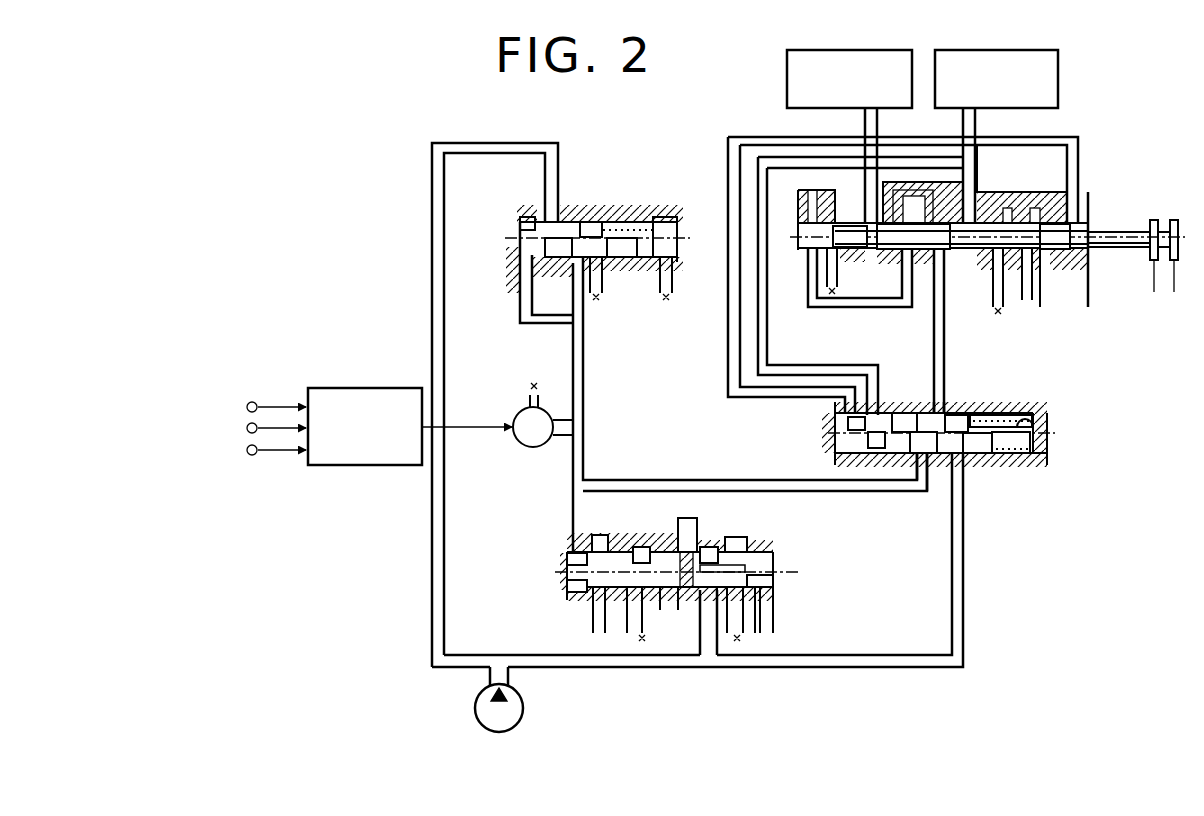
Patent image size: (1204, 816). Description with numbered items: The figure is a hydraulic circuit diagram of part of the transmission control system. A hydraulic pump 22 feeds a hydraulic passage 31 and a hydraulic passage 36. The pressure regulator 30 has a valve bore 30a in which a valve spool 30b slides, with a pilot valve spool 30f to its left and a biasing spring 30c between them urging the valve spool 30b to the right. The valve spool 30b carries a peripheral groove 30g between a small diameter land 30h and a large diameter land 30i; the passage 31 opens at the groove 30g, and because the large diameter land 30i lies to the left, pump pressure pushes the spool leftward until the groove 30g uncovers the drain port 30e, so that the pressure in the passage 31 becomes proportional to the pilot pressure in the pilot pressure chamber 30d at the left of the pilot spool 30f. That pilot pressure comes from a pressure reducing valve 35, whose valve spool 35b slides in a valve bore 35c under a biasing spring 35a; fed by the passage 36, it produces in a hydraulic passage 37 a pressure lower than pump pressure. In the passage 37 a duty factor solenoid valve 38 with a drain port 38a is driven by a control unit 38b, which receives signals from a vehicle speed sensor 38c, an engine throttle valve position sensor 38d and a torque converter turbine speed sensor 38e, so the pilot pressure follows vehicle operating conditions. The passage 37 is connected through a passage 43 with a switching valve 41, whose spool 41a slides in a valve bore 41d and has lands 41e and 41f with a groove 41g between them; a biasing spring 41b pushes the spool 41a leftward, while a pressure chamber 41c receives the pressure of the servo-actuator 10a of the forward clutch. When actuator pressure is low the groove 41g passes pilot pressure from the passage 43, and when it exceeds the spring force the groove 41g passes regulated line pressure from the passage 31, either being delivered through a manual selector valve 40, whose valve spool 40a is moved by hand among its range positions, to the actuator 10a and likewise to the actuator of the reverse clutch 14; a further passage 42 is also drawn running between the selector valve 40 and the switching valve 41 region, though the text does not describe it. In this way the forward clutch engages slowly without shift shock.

The servo-actuator 10a is at (1058, 82).
The reverse clutch 14 is at (787, 82).
The hydraulic pump 22 is at (523, 708).
The pressure regulator 30 is at (712, 528).
The valve bore 30a is at (757, 545).
The valve spool 30b is at (763, 588).
The biasing spring 30c is at (634, 547).
The pilot pressure chamber 30d is at (566, 583).
The drain port 30e is at (738, 624).
The pilot valve spool 30f is at (585, 565).
The peripheral groove 30g is at (700, 565).
The small diameter land 30h is at (745, 570).
The large diameter land 30i is at (672, 603).
The hydraulic passage 31 is at (915, 667).
The pressure reducing valve 35 is at (618, 203).
The biasing spring 35a is at (654, 220).
The valve spool 35b is at (523, 230).
The valve bore 35c is at (631, 228).
The hydraulic passage 36 is at (445, 379).
The hydraulic passage 37 is at (585, 358).
The duty factor solenoid valve 38 is at (527, 445).
The drain port 38a is at (528, 404).
The control unit 38b is at (362, 466).
The vehicle speed sensor 38c is at (253, 401).
The engine throttle valve position sensor 38d is at (250, 433).
The torque converter turbine speed sensor 38e is at (252, 456).
The manual selector valve 40 is at (1005, 170).
The valve spool 40a is at (1107, 250).
The switching valve 41 is at (975, 392).
The spool 41a is at (978, 449).
The biasing spring 41b is at (1013, 453).
The pressure chamber 41c is at (884, 413).
The valve bore 41d is at (1027, 423).
The land 41e is at (966, 418).
The land 41f is at (936, 413).
The groove 41g is at (948, 412).
The oil passage 42 is at (812, 376).
The passage 43 is at (924, 486).